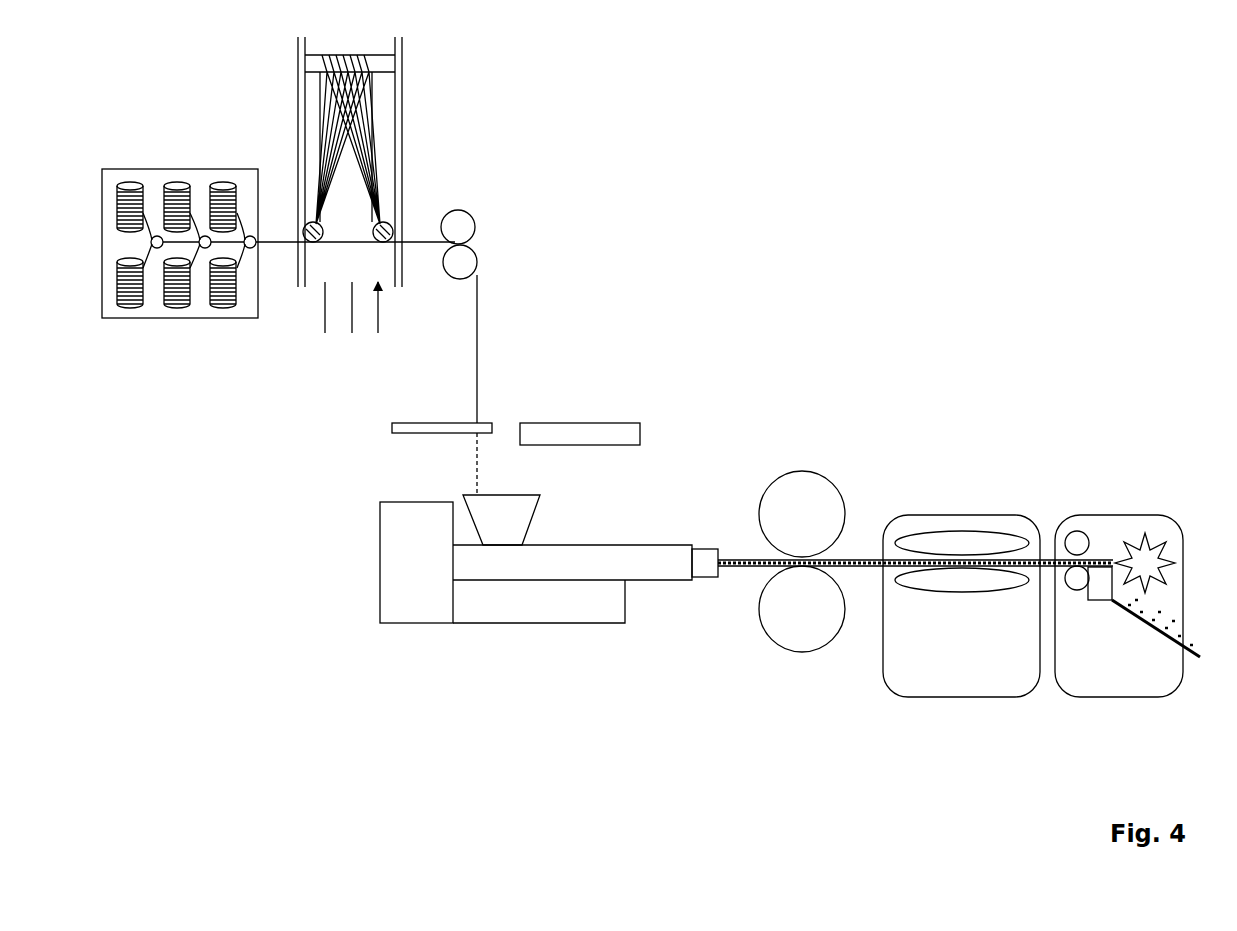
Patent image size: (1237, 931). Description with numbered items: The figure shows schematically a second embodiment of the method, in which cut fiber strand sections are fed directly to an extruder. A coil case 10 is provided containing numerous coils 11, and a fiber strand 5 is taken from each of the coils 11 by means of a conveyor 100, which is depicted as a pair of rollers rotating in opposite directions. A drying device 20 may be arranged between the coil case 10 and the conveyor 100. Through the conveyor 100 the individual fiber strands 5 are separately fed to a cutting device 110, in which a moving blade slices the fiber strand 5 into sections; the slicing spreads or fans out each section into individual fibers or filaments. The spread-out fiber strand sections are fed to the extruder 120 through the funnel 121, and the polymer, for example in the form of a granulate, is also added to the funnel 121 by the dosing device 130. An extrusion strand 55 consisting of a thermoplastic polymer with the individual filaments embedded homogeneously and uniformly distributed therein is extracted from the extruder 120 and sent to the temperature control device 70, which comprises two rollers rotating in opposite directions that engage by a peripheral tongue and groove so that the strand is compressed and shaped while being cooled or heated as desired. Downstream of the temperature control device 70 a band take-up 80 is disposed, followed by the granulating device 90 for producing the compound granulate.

The coil case 10 is at (150, 168).
The coils 11 is at (222, 182).
The fiber strand 5 is at (248, 236).
The drying device 20 is at (428, 102).
The conveyor 100 is at (465, 225).
The cutting device 110 is at (395, 428).
The dosing device 130 is at (640, 434).
The extruder 120 is at (395, 562).
The funnel 121 is at (522, 520).
The extrusion strand 55 is at (743, 567).
The temperature control device 70 is at (803, 661).
The band take-up 80 is at (963, 677).
The granulating device 90 is at (1122, 677).